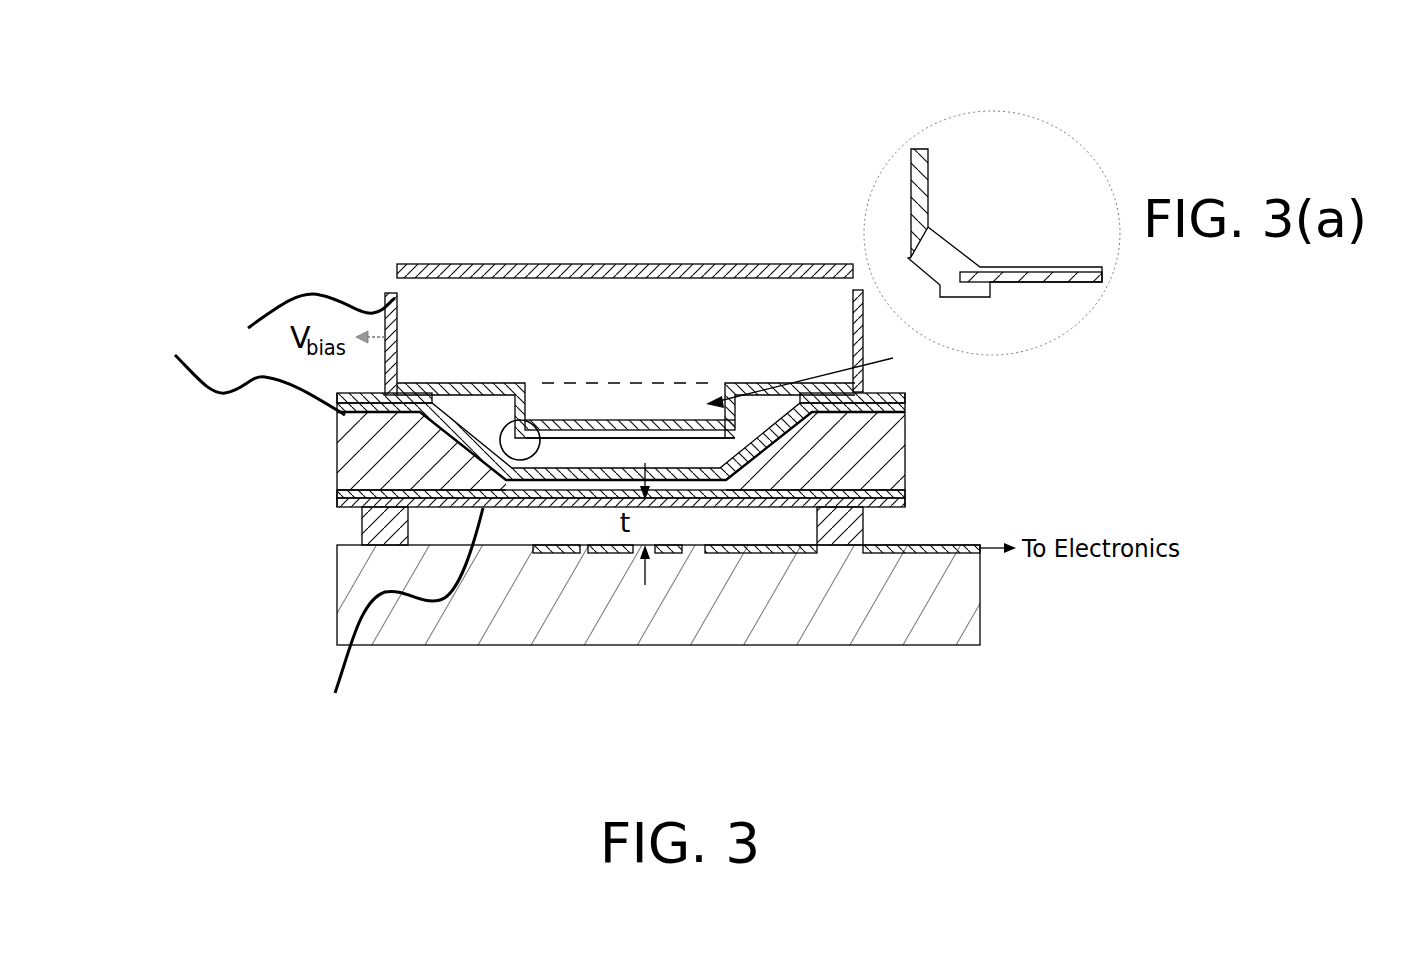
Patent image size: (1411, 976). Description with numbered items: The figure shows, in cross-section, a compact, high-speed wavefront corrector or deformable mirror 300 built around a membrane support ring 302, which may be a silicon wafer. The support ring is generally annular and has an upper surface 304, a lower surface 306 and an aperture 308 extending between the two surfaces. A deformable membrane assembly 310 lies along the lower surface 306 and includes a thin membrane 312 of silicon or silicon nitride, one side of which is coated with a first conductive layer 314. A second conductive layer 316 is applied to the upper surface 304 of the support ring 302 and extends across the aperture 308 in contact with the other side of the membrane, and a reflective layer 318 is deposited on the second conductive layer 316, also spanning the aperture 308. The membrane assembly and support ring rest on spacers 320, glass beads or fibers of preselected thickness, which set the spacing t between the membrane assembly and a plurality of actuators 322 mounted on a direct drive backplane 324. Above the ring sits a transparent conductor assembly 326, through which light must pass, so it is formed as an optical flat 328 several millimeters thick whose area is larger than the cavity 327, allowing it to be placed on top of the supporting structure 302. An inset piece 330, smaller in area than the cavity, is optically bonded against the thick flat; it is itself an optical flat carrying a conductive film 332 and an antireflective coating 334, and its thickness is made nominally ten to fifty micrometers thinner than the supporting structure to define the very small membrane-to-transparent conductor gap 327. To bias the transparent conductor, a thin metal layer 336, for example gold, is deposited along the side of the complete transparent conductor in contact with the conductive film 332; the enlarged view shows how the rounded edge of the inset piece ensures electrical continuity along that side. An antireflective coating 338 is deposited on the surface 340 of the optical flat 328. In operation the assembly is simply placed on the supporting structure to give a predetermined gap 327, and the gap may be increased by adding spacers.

In FIG. 3, the deformable mirror 300 is at (190, 231).
In FIG. 3, the membrane support ring 302 is at (362, 428).
In FIG. 3, the upper surface 304 is at (237, 370).
In FIG. 3, the lower surface 306 is at (342, 497).
In FIG. 3, the aperture 308 is at (733, 481).
In FIG. 3, the deformable membrane assembly 310 is at (397, 618).
In FIG. 3, the membrane 312 is at (903, 487).
In FIG. 3, the first conductive layer 314 is at (866, 506).
In FIG. 3, the second conductive layer 316 is at (903, 407).
In FIG. 3, the reflective layer 318 is at (775, 432).
In FIG. 3, the spacers 320 is at (363, 518).
In FIG. 3, the actuators 322 is at (510, 638).
In FIG. 3, the direct drive backplane 324 is at (718, 592).
In FIG. 3, the transparent conductor assembly 326 is at (372, 273).
In FIG. 3, the membrane-to-transparent conductor gap 327 is at (597, 447).
In FIG. 3, the optical flat 328 is at (481, 332).
In FIG. 3, the inset piece 330 is at (819, 373).
In FIG. 3, the conductive film 332 is at (543, 413).
The conductive film 332 is at (1068, 200).
In FIG. 3, the antireflective coating 334 is at (660, 432).
The antireflective coating 334 is at (1068, 277).
In FIG. 3, the metal layer 336 is at (857, 292).
The metal layer 336 is at (918, 195).
In FIG. 3, the antireflective coating 338 is at (415, 278).
In FIG. 3, the surface 340 is at (298, 323).